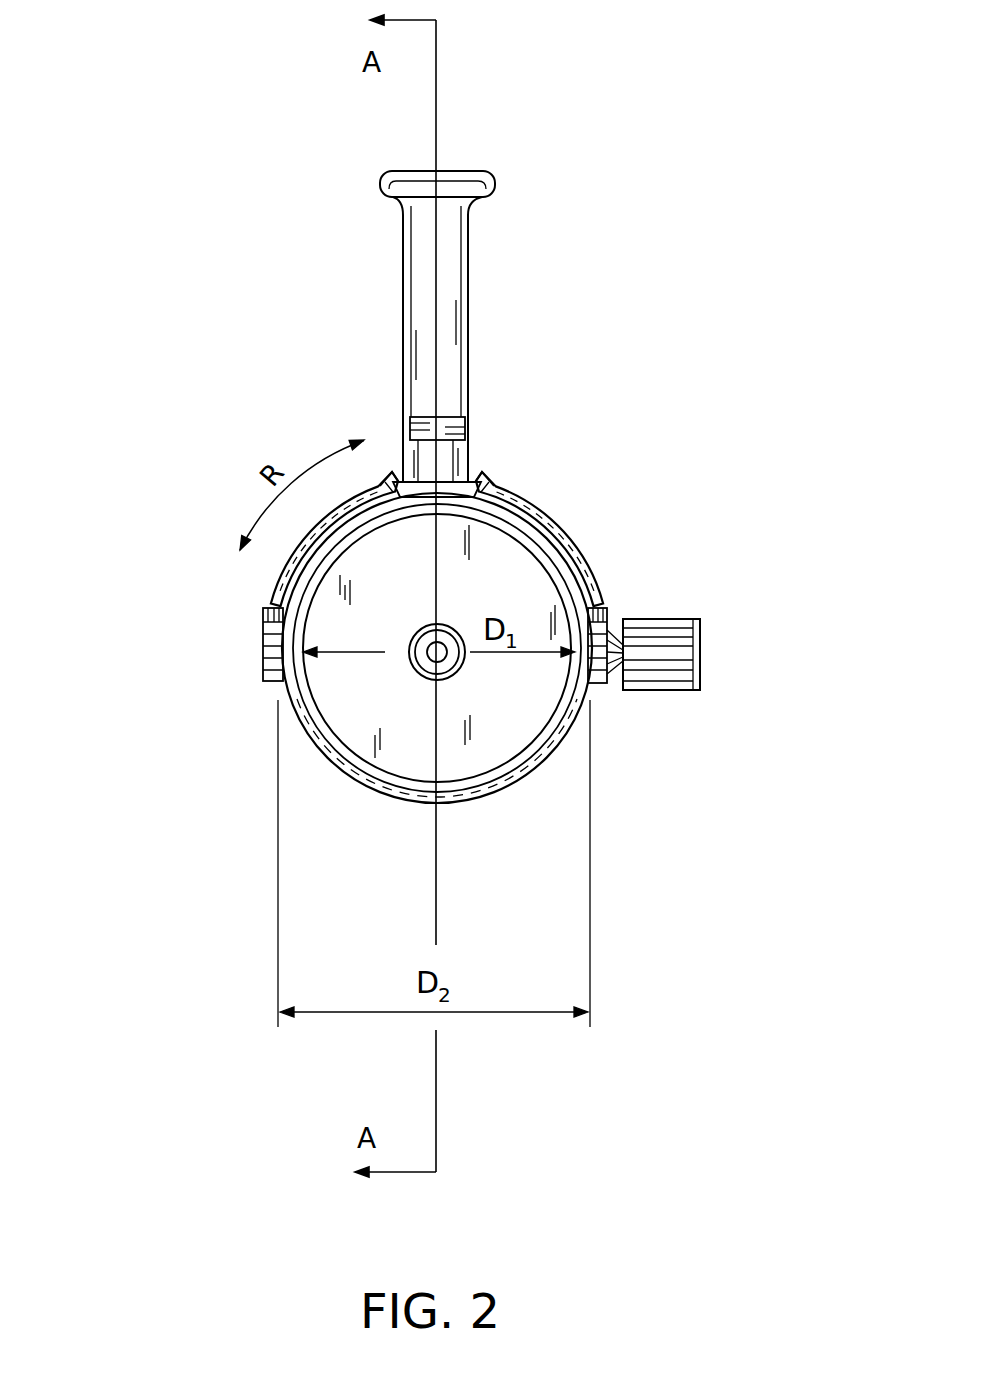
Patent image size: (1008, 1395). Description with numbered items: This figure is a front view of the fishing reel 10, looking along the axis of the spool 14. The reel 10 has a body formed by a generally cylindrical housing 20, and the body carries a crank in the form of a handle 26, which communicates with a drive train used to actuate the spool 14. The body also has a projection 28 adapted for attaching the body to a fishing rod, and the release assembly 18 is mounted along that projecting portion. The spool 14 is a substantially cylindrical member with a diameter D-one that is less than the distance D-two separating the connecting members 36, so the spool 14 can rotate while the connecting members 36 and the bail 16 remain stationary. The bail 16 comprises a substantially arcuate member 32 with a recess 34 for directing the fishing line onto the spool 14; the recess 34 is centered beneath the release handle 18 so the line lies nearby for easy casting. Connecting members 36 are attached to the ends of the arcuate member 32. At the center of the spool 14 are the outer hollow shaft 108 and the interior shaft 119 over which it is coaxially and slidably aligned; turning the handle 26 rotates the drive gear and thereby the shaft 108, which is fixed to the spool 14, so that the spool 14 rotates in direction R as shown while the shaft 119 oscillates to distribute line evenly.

The fishing reel 10 is at (240, 249).
The spool 14 is at (495, 753).
The bail 16 is at (585, 568).
The release assembly 18 is at (410, 420).
The housing 20 is at (345, 775).
The handle 26 is at (702, 652).
The projection 28 is at (465, 180).
The arcuate member 32 is at (525, 497).
The recess 34 is at (470, 462).
The connecting member 36 is at (265, 600).
The outer hollow shaft 108 is at (460, 668).
The interior shaft 119 is at (417, 670).